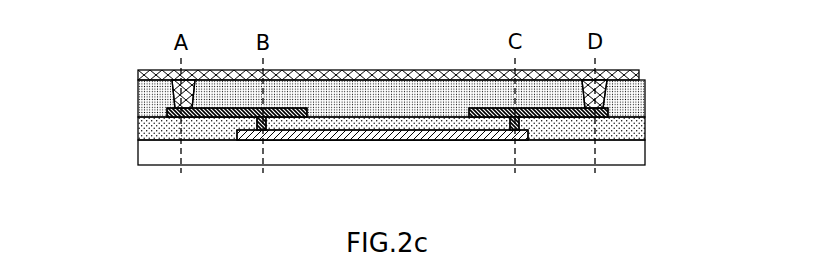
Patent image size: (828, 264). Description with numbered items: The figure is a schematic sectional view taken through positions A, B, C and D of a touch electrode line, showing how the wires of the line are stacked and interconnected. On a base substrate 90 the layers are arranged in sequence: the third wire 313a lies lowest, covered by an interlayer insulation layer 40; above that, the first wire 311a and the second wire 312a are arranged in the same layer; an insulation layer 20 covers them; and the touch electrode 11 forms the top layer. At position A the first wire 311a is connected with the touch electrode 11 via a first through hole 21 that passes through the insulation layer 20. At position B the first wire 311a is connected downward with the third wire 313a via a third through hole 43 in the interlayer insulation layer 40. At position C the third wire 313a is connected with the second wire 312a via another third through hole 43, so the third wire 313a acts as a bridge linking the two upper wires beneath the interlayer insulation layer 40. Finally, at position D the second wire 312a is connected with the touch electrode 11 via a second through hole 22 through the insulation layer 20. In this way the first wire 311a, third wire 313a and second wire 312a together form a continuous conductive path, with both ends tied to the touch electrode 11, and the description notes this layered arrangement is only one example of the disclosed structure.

The touch electrode 11 is at (640, 73).
The insulation layer 20 is at (638, 98).
The first through hole 21 is at (175, 93).
The second through hole 22 is at (580, 91).
The interlayer insulation layer 40 is at (638, 130).
The third through hole 43 is at (257, 119).
The base substrate 90 is at (637, 152).
The first wire 311a is at (289, 117).
The second wire 312a is at (553, 117).
The third wire 313a is at (405, 140).